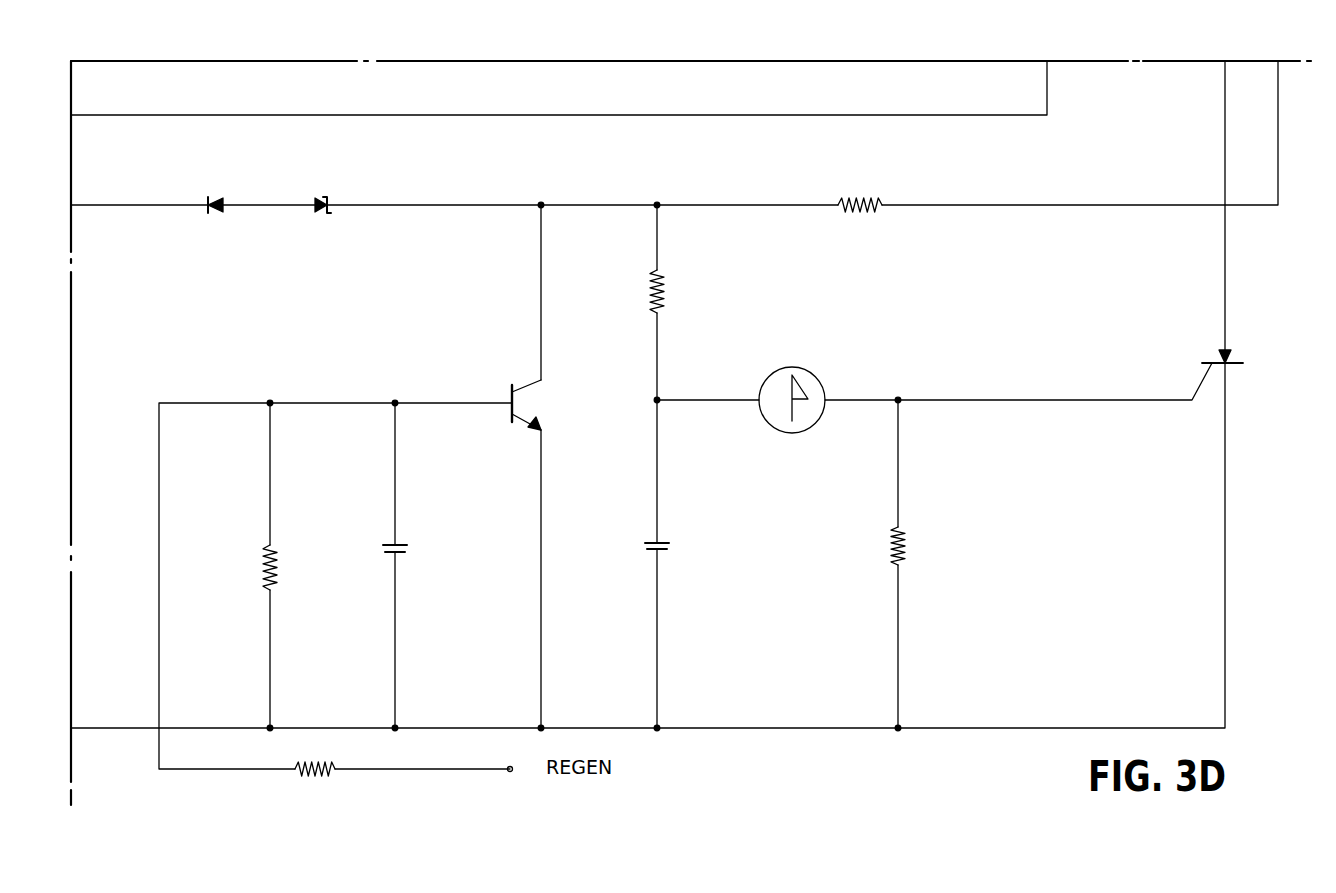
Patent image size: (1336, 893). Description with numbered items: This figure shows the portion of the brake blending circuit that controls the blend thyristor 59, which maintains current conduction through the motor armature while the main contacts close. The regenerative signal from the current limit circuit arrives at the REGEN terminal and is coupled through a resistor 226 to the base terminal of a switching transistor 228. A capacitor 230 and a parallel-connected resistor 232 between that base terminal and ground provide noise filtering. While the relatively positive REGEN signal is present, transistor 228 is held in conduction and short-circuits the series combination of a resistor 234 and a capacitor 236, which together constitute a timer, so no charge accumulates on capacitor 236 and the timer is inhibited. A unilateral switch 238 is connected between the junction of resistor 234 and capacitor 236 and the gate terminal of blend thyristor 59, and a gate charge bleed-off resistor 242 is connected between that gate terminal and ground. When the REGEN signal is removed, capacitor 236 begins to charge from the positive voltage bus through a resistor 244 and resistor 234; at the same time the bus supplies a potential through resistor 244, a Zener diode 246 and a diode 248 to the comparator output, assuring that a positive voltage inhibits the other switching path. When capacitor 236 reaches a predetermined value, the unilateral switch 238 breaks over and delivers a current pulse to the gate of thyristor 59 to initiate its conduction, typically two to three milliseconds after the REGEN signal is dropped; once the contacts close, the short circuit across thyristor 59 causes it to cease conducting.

The diode 248 is at (216, 194).
The Zener diode 246 is at (338, 194).
The resistor 244 is at (878, 192).
The resistor 234 is at (680, 285).
The unilateral switch 238 is at (802, 372).
The switching transistor 228 is at (548, 400).
The blend thyristor 59 is at (1240, 373).
The gate charge bleed-off resistor 242 is at (916, 545).
The capacitor 236 is at (678, 546).
The resistor 232 is at (285, 570).
The capacitor 230 is at (412, 556).
The resistor 226 is at (315, 778).